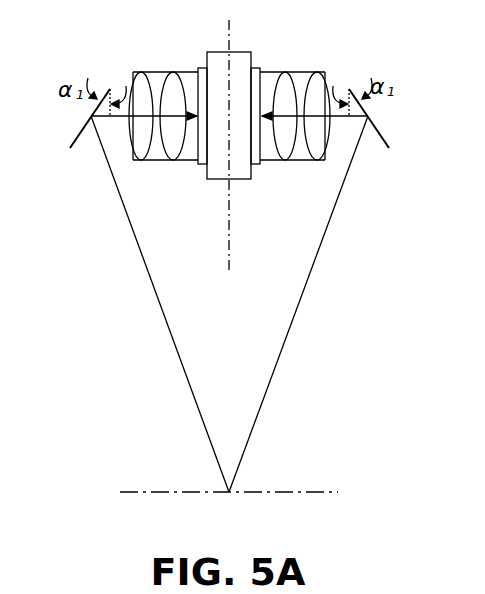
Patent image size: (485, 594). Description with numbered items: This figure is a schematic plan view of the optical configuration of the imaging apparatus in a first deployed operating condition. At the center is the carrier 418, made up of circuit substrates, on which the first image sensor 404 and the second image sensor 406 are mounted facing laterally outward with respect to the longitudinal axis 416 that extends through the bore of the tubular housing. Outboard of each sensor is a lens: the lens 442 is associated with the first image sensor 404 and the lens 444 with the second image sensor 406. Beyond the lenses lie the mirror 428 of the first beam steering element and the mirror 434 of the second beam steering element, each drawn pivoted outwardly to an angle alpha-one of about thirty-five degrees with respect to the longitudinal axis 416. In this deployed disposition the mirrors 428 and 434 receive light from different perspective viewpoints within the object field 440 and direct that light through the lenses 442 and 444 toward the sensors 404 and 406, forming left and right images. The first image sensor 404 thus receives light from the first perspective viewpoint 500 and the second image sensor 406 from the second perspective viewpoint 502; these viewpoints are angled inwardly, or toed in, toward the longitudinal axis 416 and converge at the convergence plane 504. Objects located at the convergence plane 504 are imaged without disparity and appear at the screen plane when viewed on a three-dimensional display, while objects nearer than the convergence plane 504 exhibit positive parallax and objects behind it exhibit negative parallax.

The carrier 418 is at (229, 51).
The longitudinal axis 416 is at (227, 263).
The second image sensor 406 is at (203, 165).
The first image sensor 404 is at (256, 165).
The lens 444 is at (180, 74).
The lens 442 is at (322, 72).
The mirror 434 is at (78, 136).
The mirror 428 is at (381, 136).
The second perspective viewpoint 502 is at (152, 285).
The first perspective viewpoint 500 is at (307, 285).
The object field 440 is at (208, 357).
The convergence plane 504 is at (291, 490).